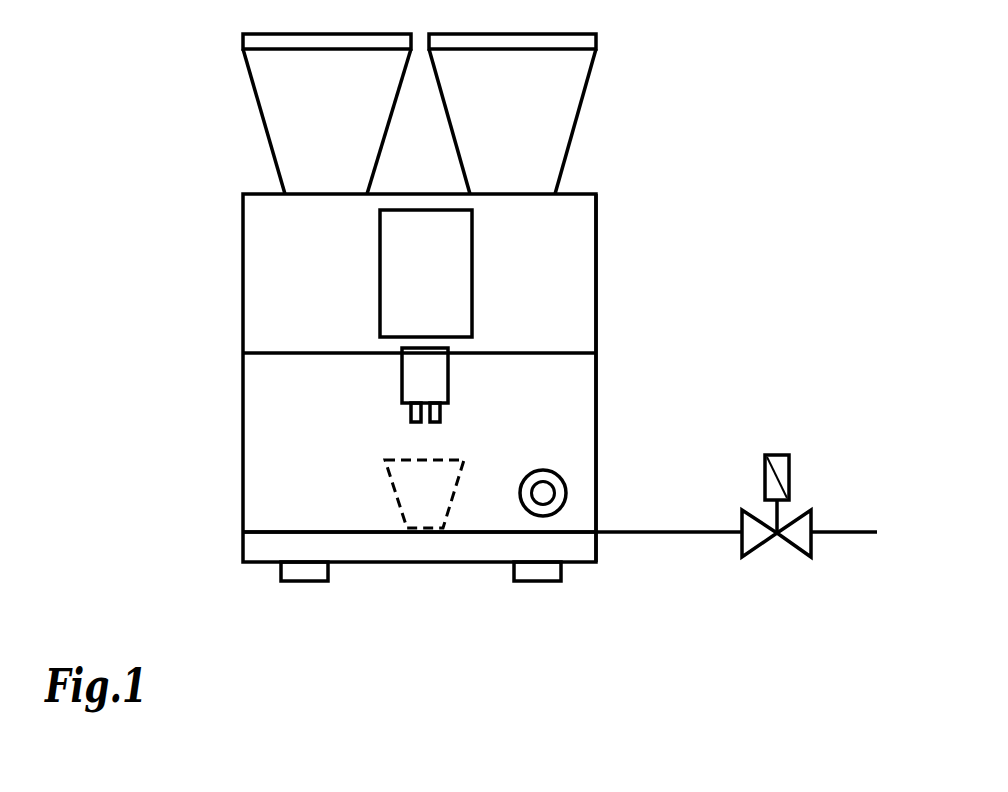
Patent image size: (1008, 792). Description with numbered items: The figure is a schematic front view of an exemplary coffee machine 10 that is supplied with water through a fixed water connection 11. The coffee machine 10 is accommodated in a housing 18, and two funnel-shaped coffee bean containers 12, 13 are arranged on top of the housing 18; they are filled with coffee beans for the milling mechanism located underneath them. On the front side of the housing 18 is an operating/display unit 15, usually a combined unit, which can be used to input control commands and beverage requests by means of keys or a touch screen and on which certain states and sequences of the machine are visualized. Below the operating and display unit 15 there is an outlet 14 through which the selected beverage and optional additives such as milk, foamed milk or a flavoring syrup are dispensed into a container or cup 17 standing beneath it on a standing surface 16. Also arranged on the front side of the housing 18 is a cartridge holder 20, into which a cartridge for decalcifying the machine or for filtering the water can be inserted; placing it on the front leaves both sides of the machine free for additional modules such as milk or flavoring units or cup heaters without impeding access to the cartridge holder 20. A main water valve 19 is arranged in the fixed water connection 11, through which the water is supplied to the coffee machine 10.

The coffee machine 10 is at (636, 328).
The fixed water connection 11 is at (665, 533).
The coffee bean container 12 is at (295, 117).
The coffee bean container 13 is at (547, 134).
The outlet 14 is at (383, 377).
The operating/display unit 15 is at (420, 260).
The standing surface 16 is at (466, 530).
The container (cup) 17 is at (418, 491).
The housing 18 is at (598, 248).
The main water valve 19 is at (798, 548).
The cartridge holder 20 is at (580, 490).